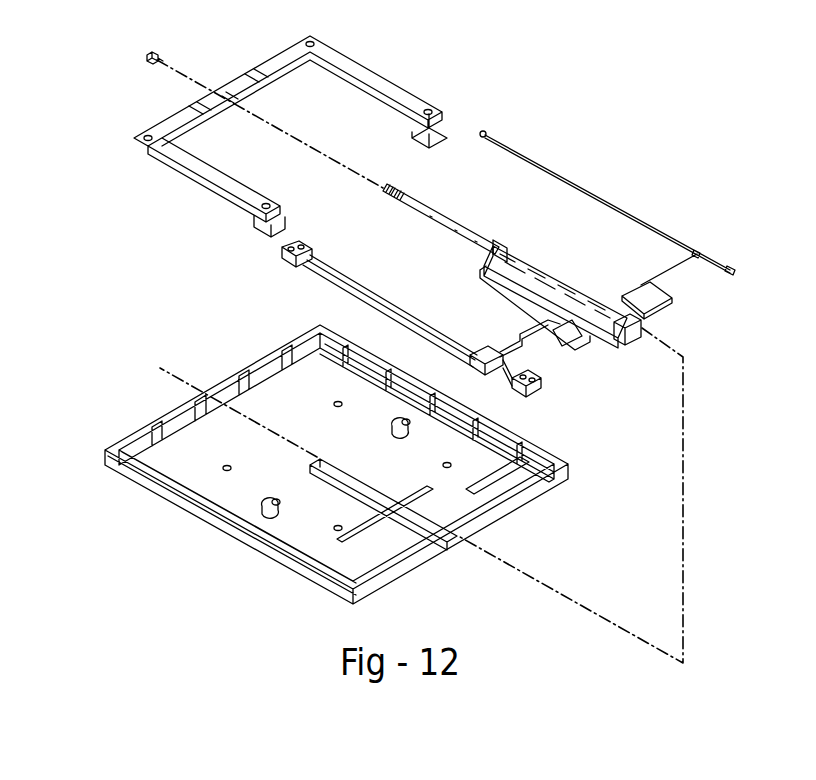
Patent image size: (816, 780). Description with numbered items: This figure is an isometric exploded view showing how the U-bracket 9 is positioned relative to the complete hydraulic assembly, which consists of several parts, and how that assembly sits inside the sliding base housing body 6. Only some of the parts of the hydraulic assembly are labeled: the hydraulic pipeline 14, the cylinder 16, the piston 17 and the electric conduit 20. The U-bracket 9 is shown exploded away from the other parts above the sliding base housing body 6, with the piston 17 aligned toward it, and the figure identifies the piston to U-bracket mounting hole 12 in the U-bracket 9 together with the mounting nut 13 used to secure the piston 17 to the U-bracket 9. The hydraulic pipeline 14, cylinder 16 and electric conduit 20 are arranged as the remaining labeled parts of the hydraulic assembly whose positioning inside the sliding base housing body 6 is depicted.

The sliding base housing body 6 is at (282, 397).
The U-bracket 9 is at (222, 92).
The piston to U-bracket mounting hole 12 is at (227, 100).
The mounting nut 13 is at (152, 60).
The hydraulic pipeline 14 is at (337, 282).
The cylinder 16 is at (517, 253).
The piston 17 is at (443, 230).
The electric conduit 20 is at (608, 198).